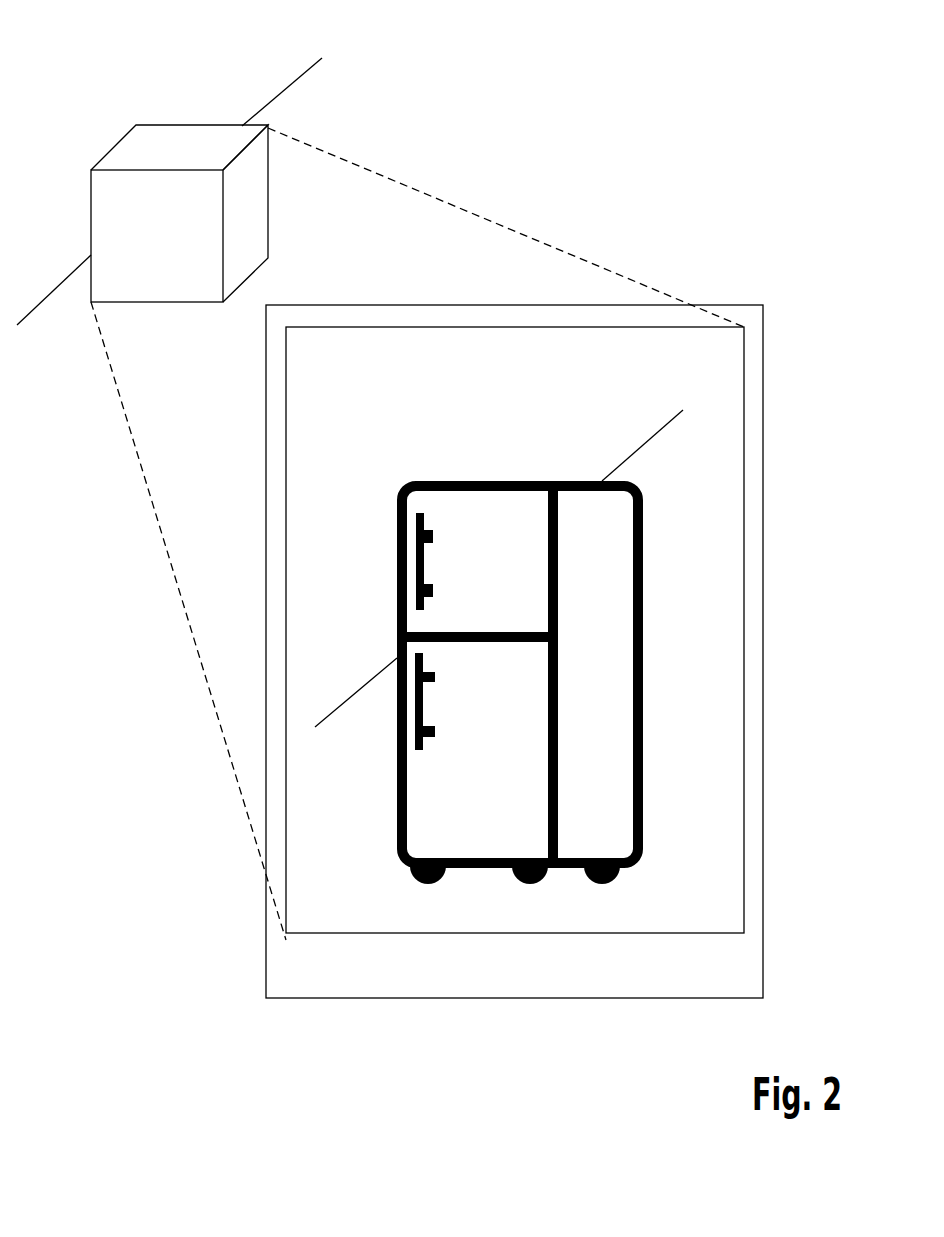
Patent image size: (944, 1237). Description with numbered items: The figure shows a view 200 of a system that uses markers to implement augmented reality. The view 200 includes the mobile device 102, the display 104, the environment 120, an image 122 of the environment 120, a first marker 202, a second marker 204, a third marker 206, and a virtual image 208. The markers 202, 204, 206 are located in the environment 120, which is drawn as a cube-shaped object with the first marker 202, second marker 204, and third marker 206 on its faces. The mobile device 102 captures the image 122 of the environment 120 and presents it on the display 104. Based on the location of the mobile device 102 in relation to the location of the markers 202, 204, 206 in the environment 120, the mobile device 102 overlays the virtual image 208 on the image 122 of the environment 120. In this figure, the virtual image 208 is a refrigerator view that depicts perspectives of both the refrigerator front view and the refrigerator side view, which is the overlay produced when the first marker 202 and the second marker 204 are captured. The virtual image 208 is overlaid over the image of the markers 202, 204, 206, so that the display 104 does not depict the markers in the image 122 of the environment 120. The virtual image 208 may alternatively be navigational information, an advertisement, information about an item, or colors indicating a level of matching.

The view 200 is at (415, 527).
The first marker 202 is at (183, 302).
The second marker 204 is at (268, 222).
The third marker 206 is at (215, 111).
The environment 120 is at (298, 80).
The image of the environment 122 is at (640, 447).
The mobile device 102 is at (575, 998).
The display 104 is at (546, 933).
The virtual image 208 is at (643, 582).